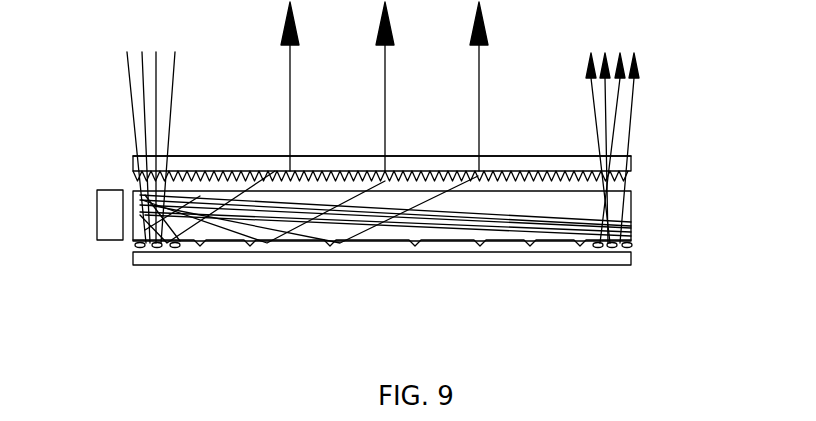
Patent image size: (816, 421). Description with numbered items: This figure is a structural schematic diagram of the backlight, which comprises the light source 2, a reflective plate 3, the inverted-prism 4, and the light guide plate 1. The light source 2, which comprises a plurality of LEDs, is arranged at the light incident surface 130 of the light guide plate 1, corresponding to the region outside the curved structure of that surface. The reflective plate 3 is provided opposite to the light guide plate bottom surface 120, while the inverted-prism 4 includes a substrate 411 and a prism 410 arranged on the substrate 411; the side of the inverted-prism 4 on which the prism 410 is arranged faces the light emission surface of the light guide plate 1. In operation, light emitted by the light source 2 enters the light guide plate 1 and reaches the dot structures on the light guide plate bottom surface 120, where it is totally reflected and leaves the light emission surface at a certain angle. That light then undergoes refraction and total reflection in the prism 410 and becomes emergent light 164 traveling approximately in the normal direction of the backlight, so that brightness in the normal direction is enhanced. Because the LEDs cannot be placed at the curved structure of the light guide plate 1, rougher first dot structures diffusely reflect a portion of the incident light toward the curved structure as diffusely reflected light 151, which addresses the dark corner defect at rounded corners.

The light guide plate 1 is at (622, 218).
The light source 2 is at (110, 216).
The reflective plate 3 is at (631, 256).
The inverted-prism 4 is at (413, 128).
The light guide plate bottom surface 120 is at (424, 242).
The light incident surface 130 is at (130, 196).
The diffusely reflected light 151 is at (640, 66).
The emergent light 164 is at (484, 22).
The prism 410 is at (585, 157).
The substrate 411 is at (528, 162).